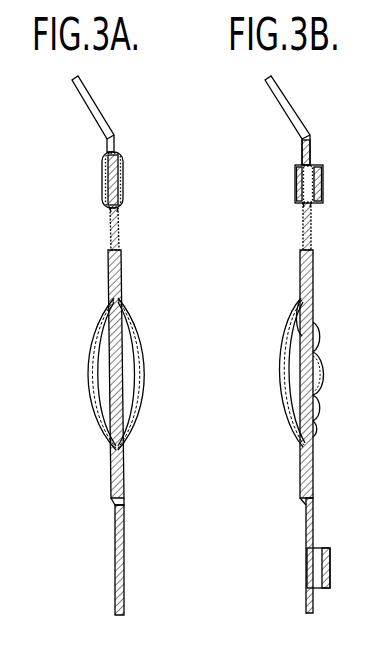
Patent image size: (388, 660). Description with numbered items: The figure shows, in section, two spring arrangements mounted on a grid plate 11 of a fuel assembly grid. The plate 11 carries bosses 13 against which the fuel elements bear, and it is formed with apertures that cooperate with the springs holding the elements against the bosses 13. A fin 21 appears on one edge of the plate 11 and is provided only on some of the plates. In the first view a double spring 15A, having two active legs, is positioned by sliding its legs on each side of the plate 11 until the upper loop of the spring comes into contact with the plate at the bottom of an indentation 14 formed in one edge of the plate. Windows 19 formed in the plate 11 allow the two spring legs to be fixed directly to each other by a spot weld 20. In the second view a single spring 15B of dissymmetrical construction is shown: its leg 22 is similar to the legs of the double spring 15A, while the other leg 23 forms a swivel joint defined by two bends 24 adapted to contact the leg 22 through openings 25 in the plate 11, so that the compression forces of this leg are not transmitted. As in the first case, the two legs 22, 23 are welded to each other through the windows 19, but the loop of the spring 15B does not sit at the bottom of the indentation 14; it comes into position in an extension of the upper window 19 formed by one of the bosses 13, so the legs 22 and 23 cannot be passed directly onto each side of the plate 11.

In FIG. 3A, the plate 11 is at (108, 190).
In FIG. 3B, the plate 11 is at (311, 144).
In FIG. 3B, the boss 13 is at (324, 182).
In FIG. 3A, the indentation 14 is at (118, 161).
In FIG. 3A, the double spring 15A is at (122, 305).
In FIG. 3B, the single spring 15B is at (274, 361).
In FIG. 3A, the window 19 is at (119, 209).
In FIG. 3B, the window 19 is at (311, 207).
In FIG. 3A, the spot weld 20 is at (118, 236).
In FIG. 3A, the fin 21 is at (97, 103).
In FIG. 3B, the leg 22 is at (284, 369).
In FIG. 3B, the other leg 23 is at (329, 363).
In FIG. 3B, the bend 24 is at (317, 334).
In FIG. 3B, the opening 25 is at (316, 428).